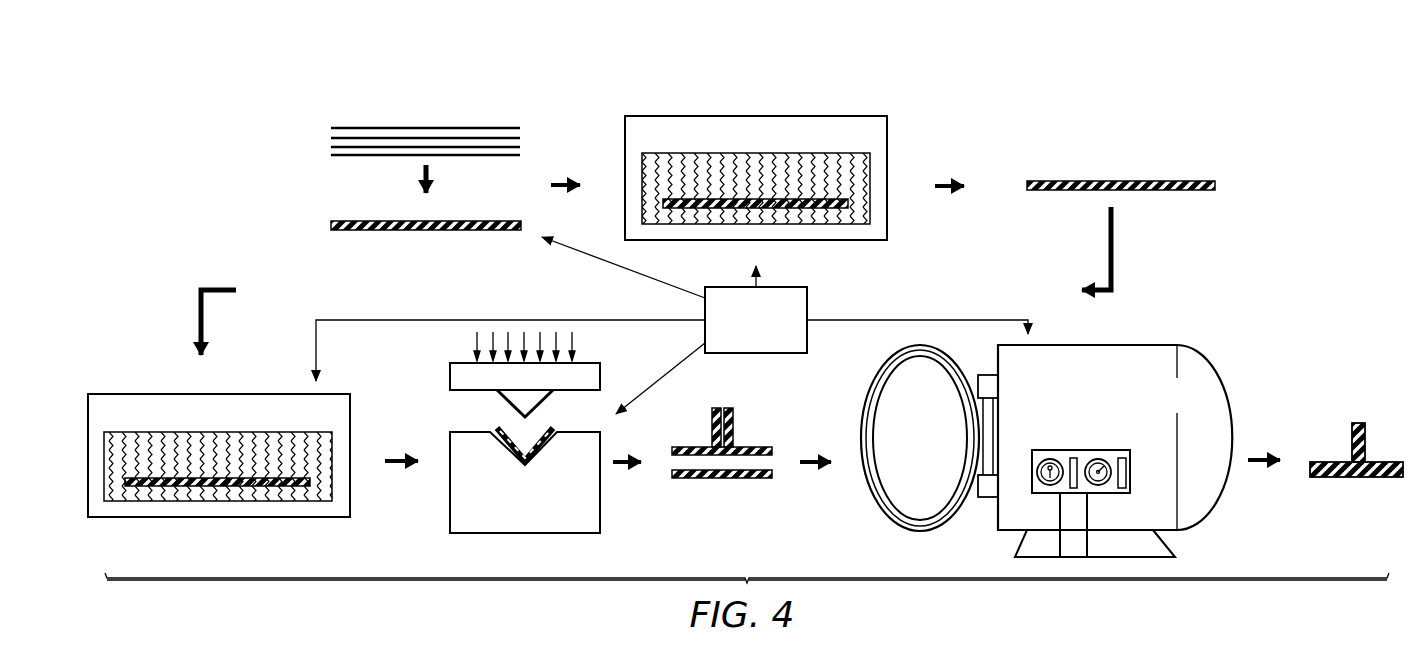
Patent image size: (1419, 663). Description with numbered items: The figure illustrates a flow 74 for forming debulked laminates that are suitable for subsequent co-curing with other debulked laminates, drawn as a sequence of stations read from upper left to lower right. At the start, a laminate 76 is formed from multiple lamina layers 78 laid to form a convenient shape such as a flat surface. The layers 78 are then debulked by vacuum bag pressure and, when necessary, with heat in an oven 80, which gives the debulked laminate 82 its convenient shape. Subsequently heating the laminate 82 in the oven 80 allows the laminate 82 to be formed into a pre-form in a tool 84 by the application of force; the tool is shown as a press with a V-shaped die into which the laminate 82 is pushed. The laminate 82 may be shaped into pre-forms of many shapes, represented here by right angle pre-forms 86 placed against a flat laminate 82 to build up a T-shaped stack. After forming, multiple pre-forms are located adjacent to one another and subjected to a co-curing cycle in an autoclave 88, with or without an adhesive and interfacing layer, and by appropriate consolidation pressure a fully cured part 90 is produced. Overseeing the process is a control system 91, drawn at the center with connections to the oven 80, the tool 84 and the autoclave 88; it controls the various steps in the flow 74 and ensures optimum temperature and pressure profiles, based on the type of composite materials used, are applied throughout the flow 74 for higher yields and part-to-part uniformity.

The flow 74 is at (1265, 125).
The laminate 76 is at (345, 232).
The lamina layers 78 is at (388, 119).
The oven 80 is at (887, 136).
The debulked laminate 82 is at (1163, 182).
The tool 84 is at (511, 510).
The right angle pre-forms 86 is at (712, 424).
The autoclave 88 is at (1228, 399).
The fully cured part 90 is at (1352, 447).
The control system 91 is at (820, 286).